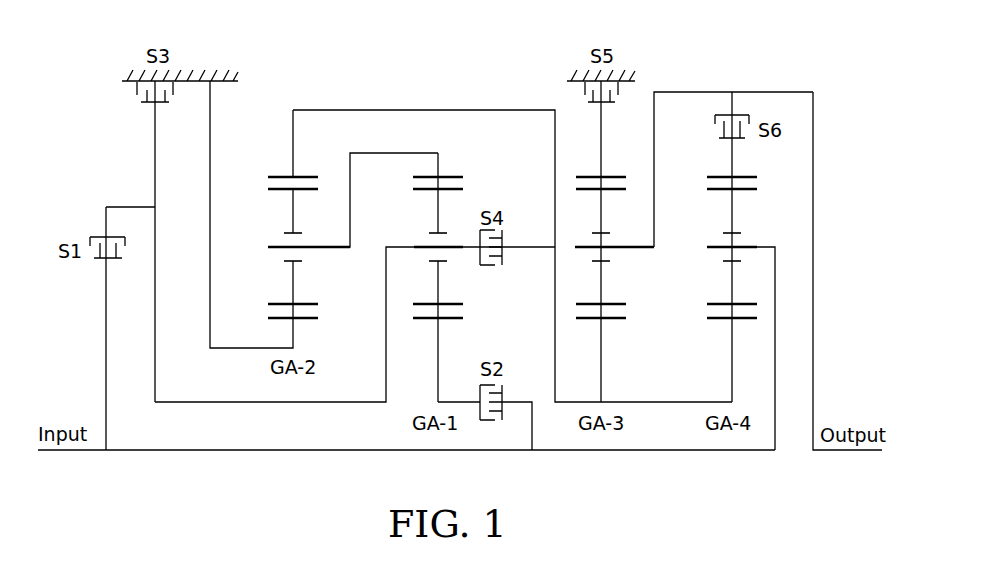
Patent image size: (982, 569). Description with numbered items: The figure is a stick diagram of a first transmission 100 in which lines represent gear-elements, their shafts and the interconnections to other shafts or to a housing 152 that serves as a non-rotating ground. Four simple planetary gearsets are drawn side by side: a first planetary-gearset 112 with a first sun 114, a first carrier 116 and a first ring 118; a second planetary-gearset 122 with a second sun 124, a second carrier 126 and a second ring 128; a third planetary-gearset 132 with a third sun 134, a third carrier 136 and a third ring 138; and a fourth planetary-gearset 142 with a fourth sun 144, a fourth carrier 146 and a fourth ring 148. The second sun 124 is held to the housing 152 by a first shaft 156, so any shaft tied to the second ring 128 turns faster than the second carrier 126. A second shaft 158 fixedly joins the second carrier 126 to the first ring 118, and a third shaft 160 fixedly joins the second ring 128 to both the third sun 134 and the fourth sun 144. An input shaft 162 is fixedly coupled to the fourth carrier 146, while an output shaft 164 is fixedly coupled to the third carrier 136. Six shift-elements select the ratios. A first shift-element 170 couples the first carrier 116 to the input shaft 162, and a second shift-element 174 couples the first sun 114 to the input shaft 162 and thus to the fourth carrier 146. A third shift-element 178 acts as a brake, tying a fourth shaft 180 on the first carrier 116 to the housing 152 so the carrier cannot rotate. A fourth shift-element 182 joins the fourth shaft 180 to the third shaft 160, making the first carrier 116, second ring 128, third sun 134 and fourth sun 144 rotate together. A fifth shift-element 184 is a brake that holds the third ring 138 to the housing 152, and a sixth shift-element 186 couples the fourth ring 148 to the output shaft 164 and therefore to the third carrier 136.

The first transmission 100 is at (108, 36).
The first planetary-gearset 112 is at (432, 448).
The first sun 114 is at (438, 378).
The first carrier 116 is at (402, 231).
The first ring 118 is at (438, 165).
The second planetary-gearset 122 is at (285, 390).
The second sun 124 is at (300, 337).
The second carrier 126 is at (260, 231).
The second ring 128 is at (293, 153).
The third planetary-gearset 132 is at (598, 448).
The third sun 134 is at (602, 377).
The third carrier 136 is at (642, 262).
The third ring 138 is at (601, 123).
The fourth planetary-gearset 142 is at (725, 448).
The fourth sun 144 is at (732, 370).
The fourth carrier 146 is at (762, 231).
The fourth ring 148 is at (732, 167).
The housing 152 is at (193, 80).
The first shaft 156 is at (210, 297).
The second shaft 158 is at (400, 152).
The third shaft 160 is at (423, 109).
The input shaft 162 is at (68, 452).
The output shaft 164 is at (850, 452).
The first shift-element 170 is at (100, 237).
The second shift-element 174 is at (503, 393).
The third shift-element 178 is at (138, 102).
The fourth shaft 180 is at (155, 297).
The fourth shift-element 182 is at (503, 233).
The fifth shift-element 184 is at (612, 102).
The sixth shift-element 186 is at (723, 113).